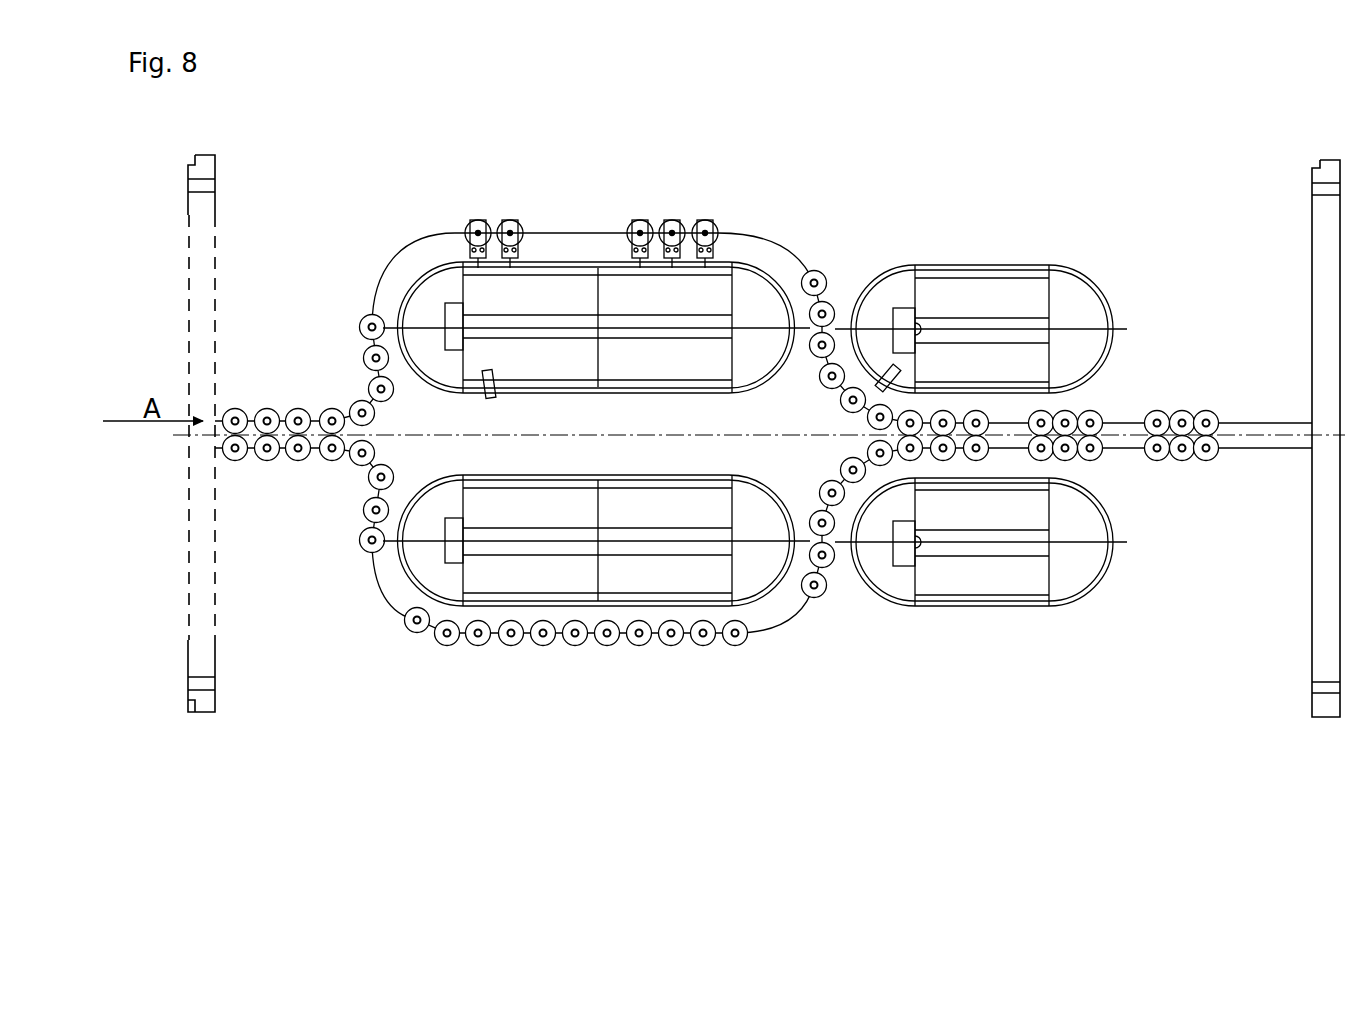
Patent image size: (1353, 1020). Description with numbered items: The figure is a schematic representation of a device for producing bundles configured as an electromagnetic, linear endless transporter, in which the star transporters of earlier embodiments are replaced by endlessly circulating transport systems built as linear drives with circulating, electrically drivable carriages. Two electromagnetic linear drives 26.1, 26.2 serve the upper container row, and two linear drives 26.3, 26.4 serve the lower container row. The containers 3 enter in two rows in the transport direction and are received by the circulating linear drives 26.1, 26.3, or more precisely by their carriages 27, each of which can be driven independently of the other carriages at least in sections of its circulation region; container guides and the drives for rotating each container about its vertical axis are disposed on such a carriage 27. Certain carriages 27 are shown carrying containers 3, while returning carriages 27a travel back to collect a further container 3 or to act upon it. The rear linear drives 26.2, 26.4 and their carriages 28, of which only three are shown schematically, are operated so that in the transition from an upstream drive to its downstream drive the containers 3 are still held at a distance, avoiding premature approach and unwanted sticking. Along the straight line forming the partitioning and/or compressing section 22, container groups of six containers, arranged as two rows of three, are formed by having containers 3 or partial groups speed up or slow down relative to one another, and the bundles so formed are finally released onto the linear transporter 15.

The container 3 is at (1172, 416).
The linear transporter 15 is at (1182, 494).
The partitioning and/or compressing section 22 is at (969, 378).
The electromagnetic linear drive 26.1 is at (780, 213).
The electromagnetic linear drive 26.2 is at (1101, 223).
The electromagnetic linear drive 26.3 is at (689, 674).
The electromagnetic linear drive 26.4 is at (1016, 635).
The transport carriage 27 is at (505, 221).
The returning carriage 27a is at (485, 371).
The carriage 28 is at (888, 368).